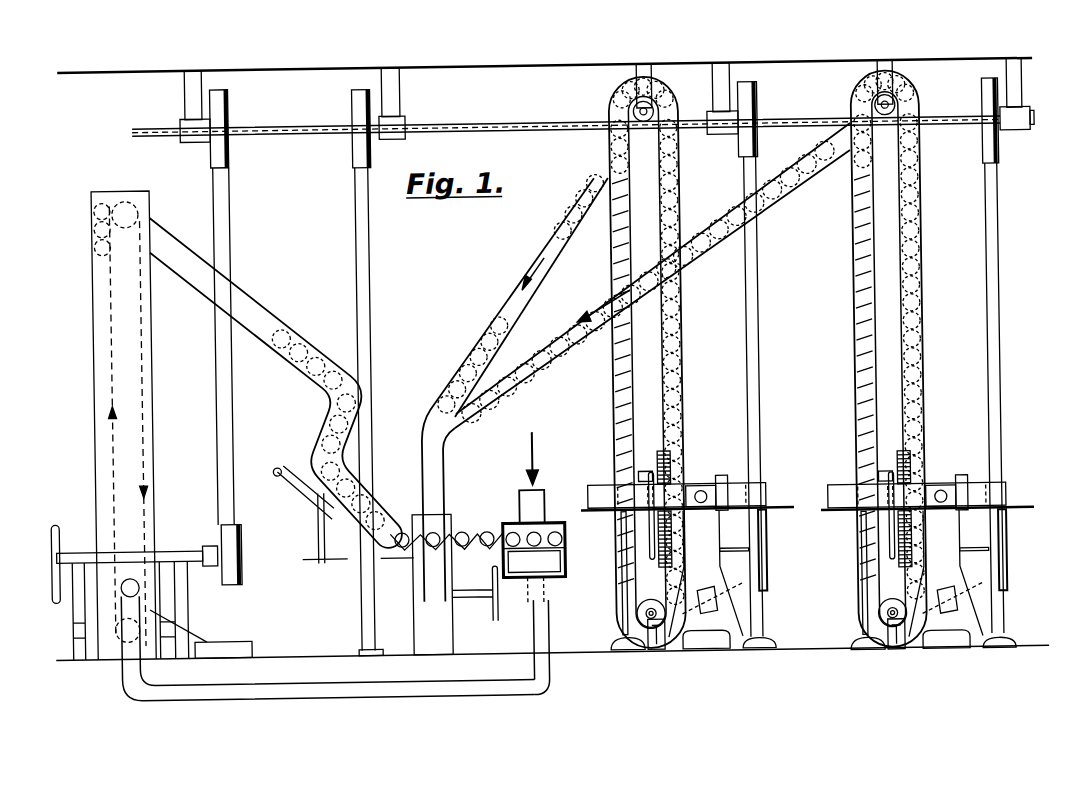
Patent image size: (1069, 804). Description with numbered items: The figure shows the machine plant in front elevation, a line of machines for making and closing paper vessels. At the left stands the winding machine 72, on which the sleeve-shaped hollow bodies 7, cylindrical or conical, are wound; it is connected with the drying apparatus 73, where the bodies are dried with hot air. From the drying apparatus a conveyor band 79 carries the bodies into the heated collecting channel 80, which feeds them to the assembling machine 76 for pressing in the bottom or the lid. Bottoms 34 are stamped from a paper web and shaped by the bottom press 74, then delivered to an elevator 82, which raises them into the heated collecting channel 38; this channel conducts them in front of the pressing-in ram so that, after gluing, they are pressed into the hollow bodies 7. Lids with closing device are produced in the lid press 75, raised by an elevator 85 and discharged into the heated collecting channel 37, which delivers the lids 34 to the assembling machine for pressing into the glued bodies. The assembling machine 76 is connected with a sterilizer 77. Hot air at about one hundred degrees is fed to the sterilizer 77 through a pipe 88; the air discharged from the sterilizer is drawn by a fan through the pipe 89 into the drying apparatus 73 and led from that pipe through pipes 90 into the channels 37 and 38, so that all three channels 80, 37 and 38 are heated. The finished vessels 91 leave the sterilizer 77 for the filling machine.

The sleeve-shaped hollow bodies 7 is at (97, 225).
The bottoms and lids 34 is at (783, 192).
The heated collecting channel 37 is at (552, 238).
The heated collecting channel 38 is at (583, 331).
The winding machine 72 is at (184, 597).
The drying apparatus 73 is at (155, 550).
The bottom press 74 is at (953, 555).
The lid press 75 is at (713, 553).
The assembling machine 76 is at (446, 515).
The sterilizer 77 is at (563, 528).
The conveyor band 79 is at (141, 348).
The heated collecting channel 80 is at (263, 326).
The elevator 82 is at (913, 222).
The elevator 85 is at (667, 386).
The pipe 88 is at (544, 512).
The pipe 89 is at (288, 692).
The pipes 90 is at (440, 667).
The finished vessels 91 is at (460, 536).